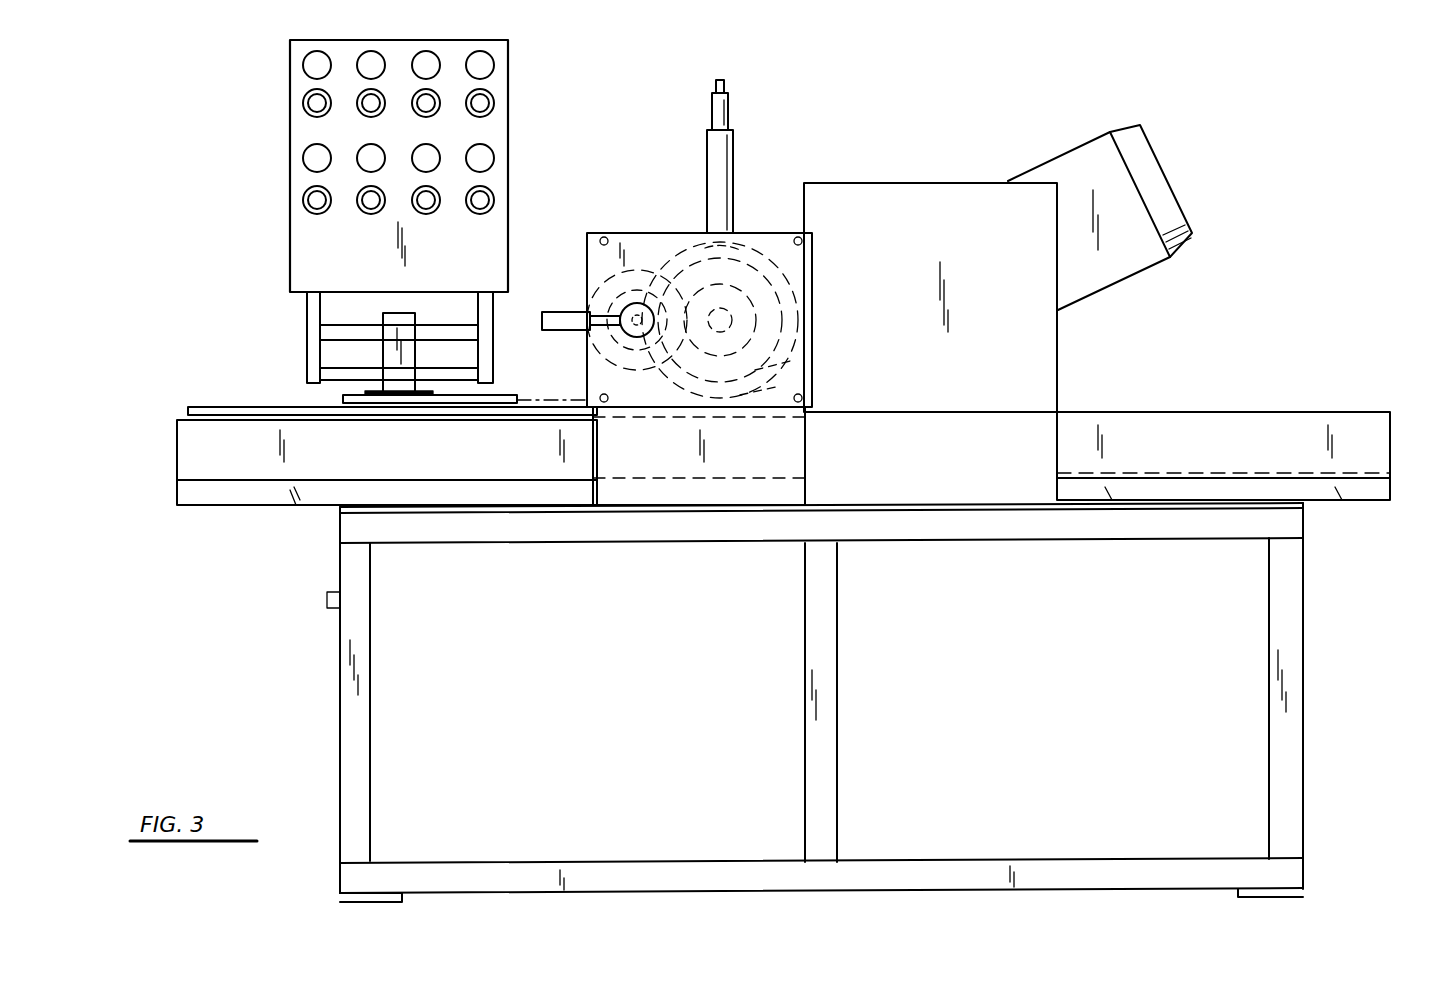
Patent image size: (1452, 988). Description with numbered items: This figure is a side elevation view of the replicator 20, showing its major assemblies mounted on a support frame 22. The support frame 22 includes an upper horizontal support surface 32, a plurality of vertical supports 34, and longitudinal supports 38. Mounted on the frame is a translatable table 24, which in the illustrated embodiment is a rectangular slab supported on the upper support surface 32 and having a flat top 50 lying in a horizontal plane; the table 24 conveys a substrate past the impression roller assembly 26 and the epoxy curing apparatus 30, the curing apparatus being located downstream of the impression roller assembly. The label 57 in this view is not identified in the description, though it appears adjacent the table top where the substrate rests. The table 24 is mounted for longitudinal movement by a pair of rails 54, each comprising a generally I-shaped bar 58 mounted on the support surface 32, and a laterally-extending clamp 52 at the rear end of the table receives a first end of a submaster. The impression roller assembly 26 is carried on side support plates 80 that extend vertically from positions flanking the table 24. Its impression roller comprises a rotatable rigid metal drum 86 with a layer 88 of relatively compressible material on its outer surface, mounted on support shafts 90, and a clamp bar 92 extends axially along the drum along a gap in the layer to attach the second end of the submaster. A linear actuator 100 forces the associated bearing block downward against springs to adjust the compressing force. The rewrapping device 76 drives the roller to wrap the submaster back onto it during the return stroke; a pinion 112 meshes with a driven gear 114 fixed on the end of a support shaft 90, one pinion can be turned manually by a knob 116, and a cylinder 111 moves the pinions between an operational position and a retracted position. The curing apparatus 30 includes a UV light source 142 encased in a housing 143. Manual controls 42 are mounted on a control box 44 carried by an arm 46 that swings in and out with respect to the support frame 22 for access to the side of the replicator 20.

The replicator 20 is at (1235, 144).
The support frame 22 is at (340, 688).
The translatable table 24 is at (1240, 414).
The impression roller assembly 26 is at (660, 232).
The epoxy curing apparatus 30 is at (994, 164).
The upper horizontal support surface 32 is at (1300, 505).
The vertical supports 34 is at (372, 675).
The longitudinal supports 38 is at (1025, 876).
The manual controls 42 is at (486, 66).
The control box 44 is at (292, 56).
The arm 46 is at (307, 325).
The flat top 50 is at (191, 405).
The platform 57 is at (312, 402).
The I-shaped bar 58 is at (680, 272).
The clamp 52 is at (780, 386).
The rails 54 is at (1352, 473).
The rewrapping device 76 is at (574, 333).
The side support plates 80 is at (590, 236).
The rigid metal drum 86 is at (800, 276).
The layer of relatively compressible material 88 is at (790, 301).
The support shafts 90 is at (790, 361).
The clamp bar 92 is at (748, 242).
The linear actuator 100 is at (733, 132).
The cylinder 111 is at (557, 312).
The pinion 112 is at (592, 372).
The driven gear 114 is at (750, 329).
The knob 116 is at (632, 308).
The UV light source 142 is at (1140, 127).
The housing 143 is at (1100, 257).